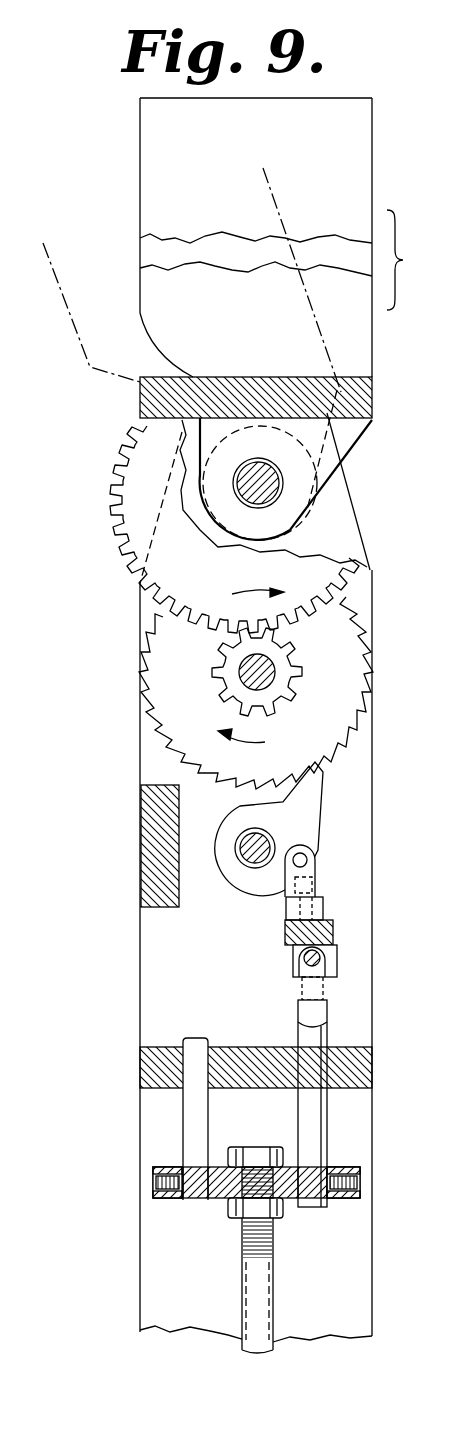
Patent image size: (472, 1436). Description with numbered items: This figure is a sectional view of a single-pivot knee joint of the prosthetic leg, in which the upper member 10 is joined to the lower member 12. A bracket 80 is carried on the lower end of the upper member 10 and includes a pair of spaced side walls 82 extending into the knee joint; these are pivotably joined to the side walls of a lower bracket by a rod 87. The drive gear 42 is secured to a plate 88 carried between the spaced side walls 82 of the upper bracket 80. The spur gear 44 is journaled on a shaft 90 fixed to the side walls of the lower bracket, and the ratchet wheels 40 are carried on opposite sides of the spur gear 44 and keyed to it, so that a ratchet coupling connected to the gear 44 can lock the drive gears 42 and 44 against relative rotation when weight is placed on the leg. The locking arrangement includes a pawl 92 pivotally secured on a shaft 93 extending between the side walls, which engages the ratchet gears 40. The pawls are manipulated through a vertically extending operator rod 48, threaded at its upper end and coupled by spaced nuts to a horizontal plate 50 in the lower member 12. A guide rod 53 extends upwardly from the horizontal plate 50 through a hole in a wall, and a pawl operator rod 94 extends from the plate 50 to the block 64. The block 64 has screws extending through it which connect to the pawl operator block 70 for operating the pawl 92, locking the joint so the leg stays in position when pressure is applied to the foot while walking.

The upper member 10 is at (365, 163).
The bracket 80 is at (363, 358).
The plate 88 is at (337, 402).
The side walls 82 is at (357, 445).
The rod 87 is at (270, 490).
The drive gear 42 is at (343, 577).
The ratchet wheel 40 is at (337, 635).
The shaft 90 is at (273, 670).
The spur gear 44 is at (287, 703).
The pawl 92 is at (317, 807).
The shaft 93 is at (247, 868).
The pawl operator block 70 is at (317, 883).
The block 64 is at (337, 952).
The pawl operator rod 94 is at (320, 1043).
The guide rod 53 is at (197, 1115).
The horizontal plate 50 is at (290, 1163).
The operator rod 48 is at (270, 1282).
The lower member 12 is at (375, 1283).